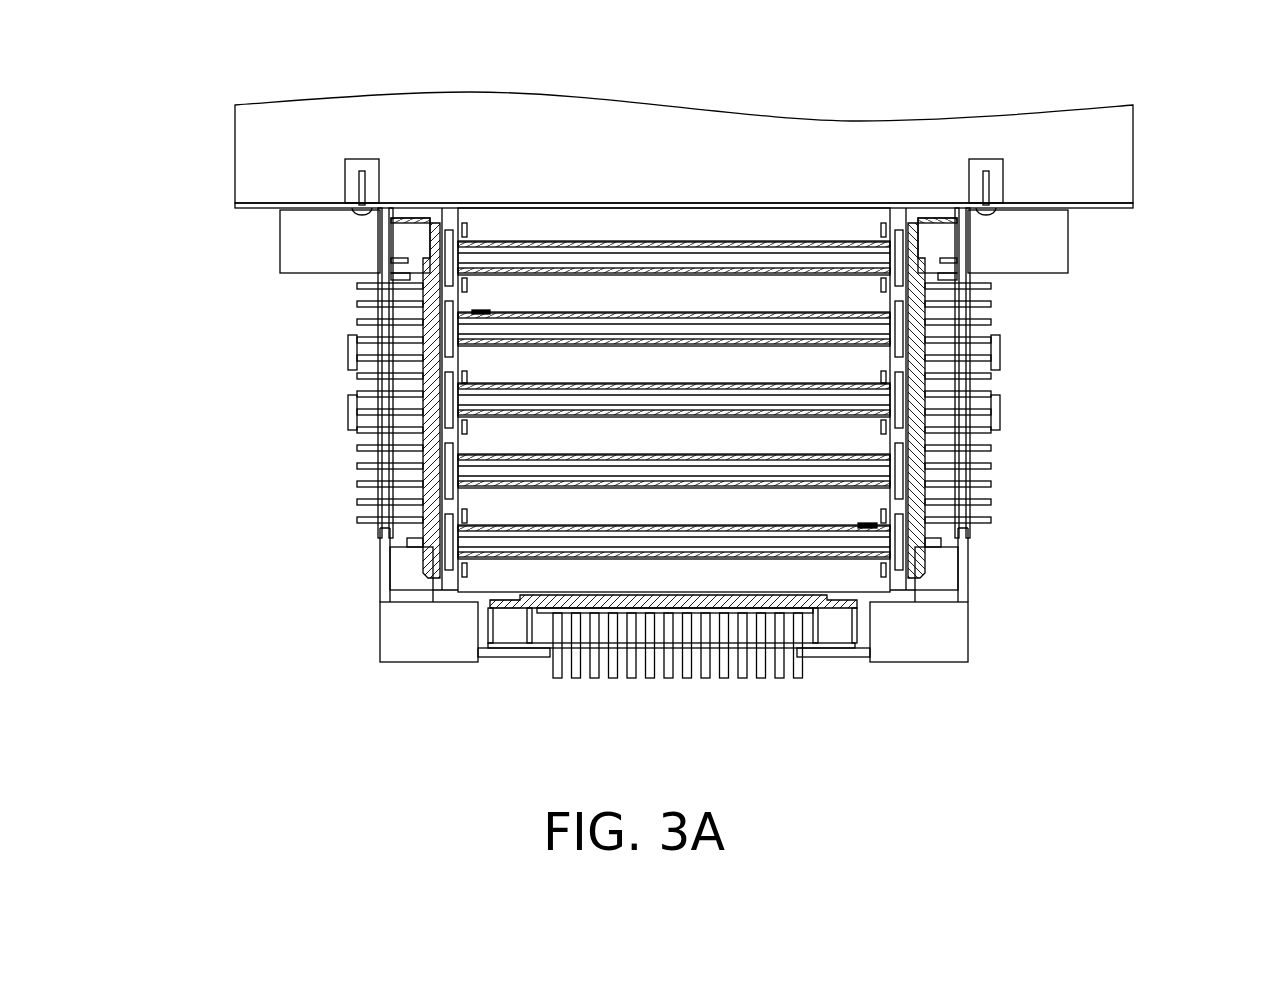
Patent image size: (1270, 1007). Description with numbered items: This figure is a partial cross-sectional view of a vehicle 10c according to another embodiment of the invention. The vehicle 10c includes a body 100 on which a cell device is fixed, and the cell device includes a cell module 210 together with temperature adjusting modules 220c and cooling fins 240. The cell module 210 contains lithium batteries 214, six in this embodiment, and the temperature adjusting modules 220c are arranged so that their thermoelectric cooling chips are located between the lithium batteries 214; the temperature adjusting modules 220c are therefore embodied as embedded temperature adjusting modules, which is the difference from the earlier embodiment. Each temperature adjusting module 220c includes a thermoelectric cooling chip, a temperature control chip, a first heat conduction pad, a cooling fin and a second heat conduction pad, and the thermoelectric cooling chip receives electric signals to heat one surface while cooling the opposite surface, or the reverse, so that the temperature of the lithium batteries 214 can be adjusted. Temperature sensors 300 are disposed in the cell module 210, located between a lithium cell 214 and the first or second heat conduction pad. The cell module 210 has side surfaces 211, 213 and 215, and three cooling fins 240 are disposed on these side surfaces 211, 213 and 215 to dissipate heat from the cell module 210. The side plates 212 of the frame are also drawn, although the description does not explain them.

The body 100 is at (1120, 158).
The vehicle 10c is at (662, 393).
The cell module 210 is at (197, 472).
The side surface 211 is at (921, 275).
The side plate 212 is at (435, 502).
The side surface 213 is at (427, 275).
The lithium battery 214 is at (470, 438).
The side surface 215 is at (512, 605).
The temperature adjusting module 220c is at (850, 453).
The cooling fin 240 is at (357, 318).
The temperature sensor 300 is at (485, 310).